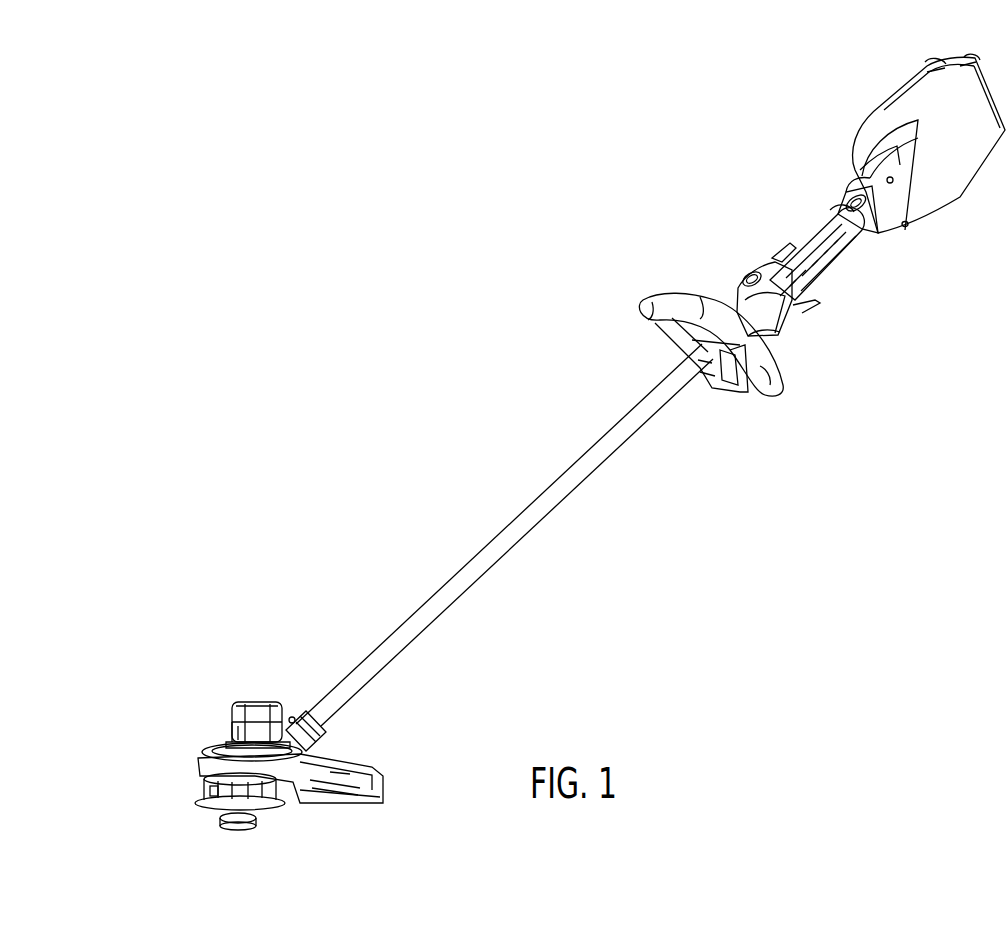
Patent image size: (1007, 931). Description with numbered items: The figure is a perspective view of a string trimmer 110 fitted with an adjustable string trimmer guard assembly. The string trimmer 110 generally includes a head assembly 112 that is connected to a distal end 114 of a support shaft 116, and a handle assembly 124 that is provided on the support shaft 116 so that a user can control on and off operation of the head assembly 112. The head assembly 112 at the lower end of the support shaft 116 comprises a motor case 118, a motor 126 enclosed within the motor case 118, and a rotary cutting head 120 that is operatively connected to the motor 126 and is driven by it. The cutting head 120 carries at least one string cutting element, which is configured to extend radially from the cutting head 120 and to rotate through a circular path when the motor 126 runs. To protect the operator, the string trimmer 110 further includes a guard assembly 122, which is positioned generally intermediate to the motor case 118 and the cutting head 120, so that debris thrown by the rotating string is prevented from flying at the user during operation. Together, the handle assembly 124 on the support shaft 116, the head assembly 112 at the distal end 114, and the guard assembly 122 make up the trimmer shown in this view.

The string trimmer 110 is at (822, 264).
The head assembly 112 is at (276, 728).
The distal end 114 is at (297, 717).
The support shaft 116 is at (587, 478).
The motor case 118 is at (249, 701).
The rotary cutting head 120 is at (282, 802).
The guard assembly 122 is at (361, 768).
The handle assembly 124 is at (754, 257).
The motor 126 is at (236, 724).